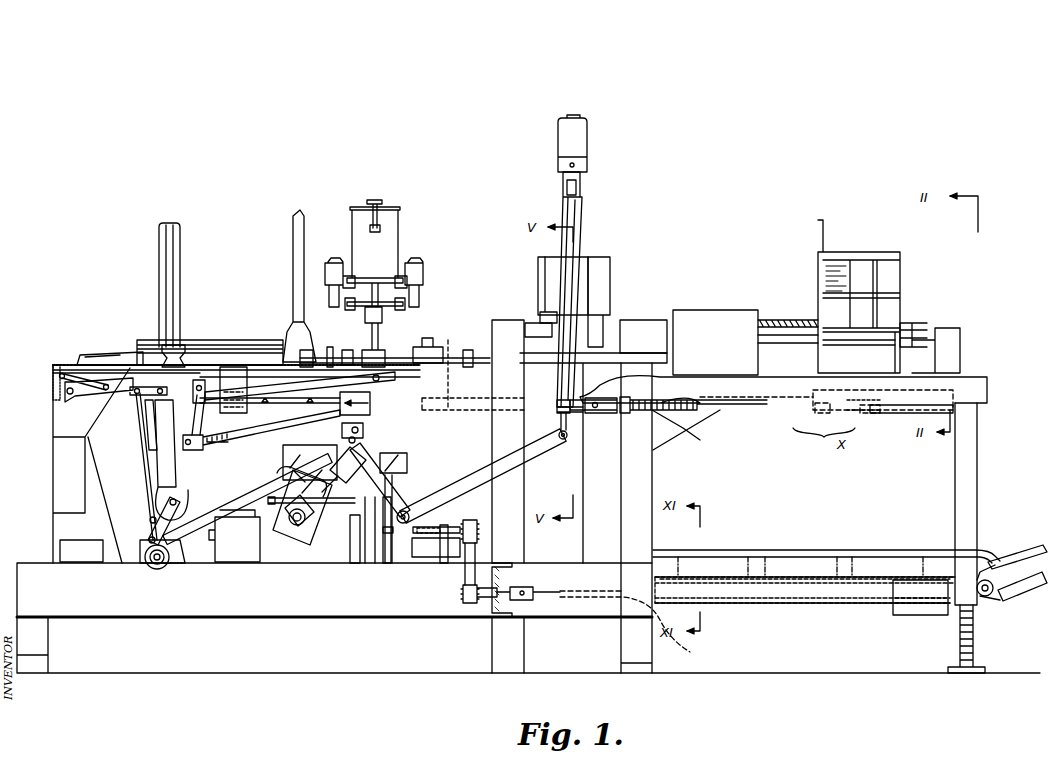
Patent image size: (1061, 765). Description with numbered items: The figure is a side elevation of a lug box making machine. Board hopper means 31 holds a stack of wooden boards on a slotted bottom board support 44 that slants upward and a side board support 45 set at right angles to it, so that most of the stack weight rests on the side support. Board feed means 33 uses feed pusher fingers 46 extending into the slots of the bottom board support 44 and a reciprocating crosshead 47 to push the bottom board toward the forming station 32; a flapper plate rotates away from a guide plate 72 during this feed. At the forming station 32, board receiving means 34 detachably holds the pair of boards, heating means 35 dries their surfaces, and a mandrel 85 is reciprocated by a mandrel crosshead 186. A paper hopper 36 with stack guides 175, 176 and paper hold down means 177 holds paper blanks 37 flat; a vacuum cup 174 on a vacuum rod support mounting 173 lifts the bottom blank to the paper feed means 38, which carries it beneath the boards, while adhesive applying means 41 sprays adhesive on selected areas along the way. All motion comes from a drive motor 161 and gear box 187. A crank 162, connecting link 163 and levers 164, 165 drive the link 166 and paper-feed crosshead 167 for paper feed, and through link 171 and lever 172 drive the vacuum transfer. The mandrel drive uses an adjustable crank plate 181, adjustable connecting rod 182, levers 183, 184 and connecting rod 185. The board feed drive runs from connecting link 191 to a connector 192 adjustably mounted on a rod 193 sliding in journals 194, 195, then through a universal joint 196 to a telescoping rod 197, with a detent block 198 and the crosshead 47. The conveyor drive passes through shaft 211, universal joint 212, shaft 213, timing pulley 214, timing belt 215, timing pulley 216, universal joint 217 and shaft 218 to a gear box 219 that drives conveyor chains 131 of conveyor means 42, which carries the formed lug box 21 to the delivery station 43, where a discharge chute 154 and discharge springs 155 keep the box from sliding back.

The paper hopper 36 is at (248, 200).
The stack guide 175 is at (180, 230).
The stack guide 176 is at (304, 231).
The adhesive applying means 41 is at (395, 184).
The forming station 32 is at (590, 96).
The mandrel crosshead 186 is at (587, 140).
The heating means 35 is at (590, 283).
The mandrel 85 is at (548, 272).
The connecting rod 185 is at (563, 291).
The board receiving means 34 is at (598, 300).
The guide plate 72 is at (703, 316).
The slotted bottom board support 44 is at (780, 319).
The board hopper means 31 is at (880, 248).
The side board support 45 is at (826, 271).
The feed pusher fingers 46 is at (920, 336).
The detent block 198 is at (828, 394).
The paper hold down means 177 is at (125, 351).
The vacuum cup 174 is at (182, 345).
The paper blank 37 is at (246, 333).
The paper-feed crosshead 167 is at (388, 372).
The journal 194 is at (450, 350).
The journal 195 is at (233, 390).
The link 166 is at (300, 386).
The lever 172 is at (105, 400).
The vacuum rod support mounting 173 is at (150, 416).
The link 171 is at (142, 466).
The paper feed means 38 is at (290, 408).
The rod 193 is at (309, 406).
The connector 192 is at (371, 418).
The connecting link 191 is at (236, 443).
The drive motor 161 is at (285, 456).
The crank 162 is at (346, 455).
The lever 183 is at (384, 471).
The lever 184 is at (460, 482).
The universal joint 196 is at (580, 420).
The telescoping rod 197 is at (680, 414).
The board feed means 33 is at (820, 441).
The crosshead 47 is at (897, 418).
The connecting link 163 is at (222, 491).
The gear box 187 is at (268, 499).
The lever 165 is at (150, 518).
The lever 164 is at (180, 521).
The adjustable crank plate 181 is at (312, 528).
The adjustable connecting rod 182 is at (315, 503).
The shaft 211 is at (355, 540).
The universal joint 212 is at (387, 540).
The shaft 213 is at (447, 545).
The timing pulley 214 is at (480, 526).
The timing belt 215 is at (476, 554).
The timing pulley 216 is at (473, 606).
The universal joint 217 is at (526, 588).
The shaft 218 is at (672, 650).
The conveyor means 42 is at (835, 624).
The gear box 219 is at (912, 617).
The lug box 21 is at (780, 553).
The discharge springs 155 is at (1030, 543).
The discharge chute 154 is at (1028, 589).
The conveyor chains 131 is at (994, 601).
The delivery station 43 is at (1045, 616).